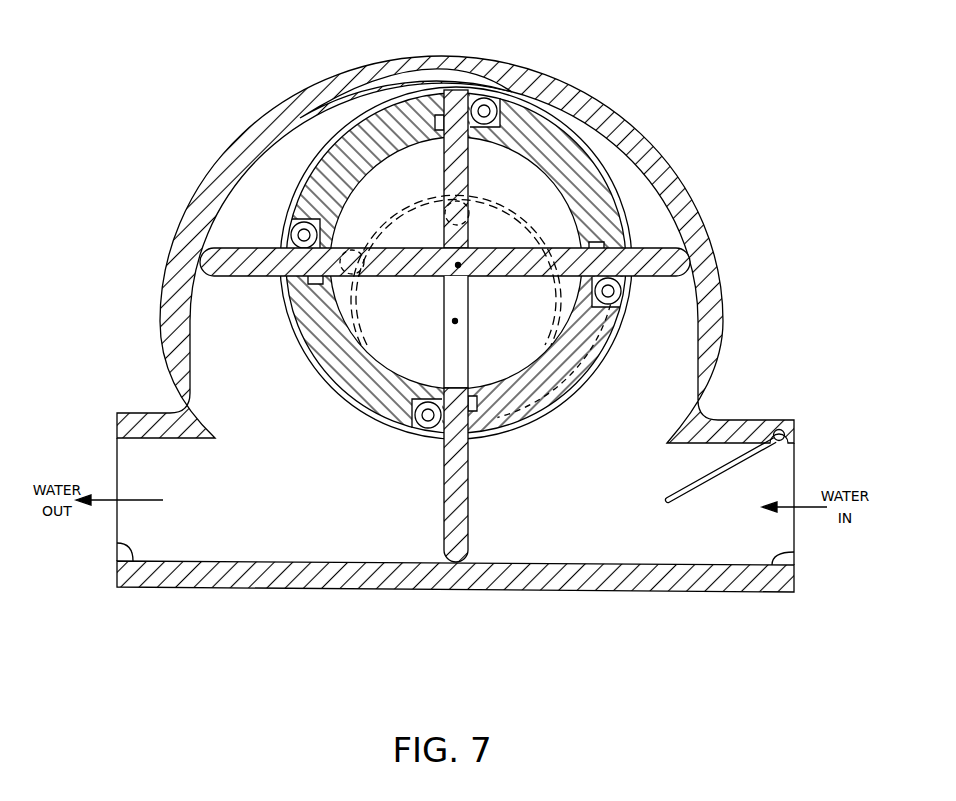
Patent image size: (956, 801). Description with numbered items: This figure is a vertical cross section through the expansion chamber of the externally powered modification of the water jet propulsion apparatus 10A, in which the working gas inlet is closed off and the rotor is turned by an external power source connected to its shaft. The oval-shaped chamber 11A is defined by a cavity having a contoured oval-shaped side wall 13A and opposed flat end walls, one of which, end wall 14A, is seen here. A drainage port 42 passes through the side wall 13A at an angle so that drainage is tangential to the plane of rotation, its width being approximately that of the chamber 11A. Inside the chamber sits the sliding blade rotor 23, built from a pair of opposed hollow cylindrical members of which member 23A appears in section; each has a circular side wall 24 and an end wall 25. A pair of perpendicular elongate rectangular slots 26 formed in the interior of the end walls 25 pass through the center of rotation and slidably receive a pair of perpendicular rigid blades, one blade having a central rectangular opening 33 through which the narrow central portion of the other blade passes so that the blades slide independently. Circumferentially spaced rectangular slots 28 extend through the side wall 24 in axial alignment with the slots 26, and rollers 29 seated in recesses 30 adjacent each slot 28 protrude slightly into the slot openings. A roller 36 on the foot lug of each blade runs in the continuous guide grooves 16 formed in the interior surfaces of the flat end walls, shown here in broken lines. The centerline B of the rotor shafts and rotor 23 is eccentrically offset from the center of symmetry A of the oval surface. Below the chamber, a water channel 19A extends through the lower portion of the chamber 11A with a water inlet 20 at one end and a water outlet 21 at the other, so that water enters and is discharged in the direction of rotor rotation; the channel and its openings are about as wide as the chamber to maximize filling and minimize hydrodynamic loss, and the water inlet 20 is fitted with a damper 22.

The water jet propulsion apparatus 10A is at (457, 306).
The oval-shaped chamber 11A is at (723, 352).
The contoured oval-shaped side wall 13A is at (250, 163).
The drainage port 42 is at (395, 72).
The flat end wall 14A is at (558, 460).
The water channel 19A is at (548, 514).
The water inlet 20 is at (794, 555).
The water outlet 21 is at (117, 547).
The damper 22 is at (708, 476).
The sliding blade rotor 23 is at (353, 410).
The hollow cylindrical member 23A is at (335, 394).
The circular side wall 24 is at (322, 352).
The end wall 25 is at (406, 196).
The elongate rectangular slots 26 is at (468, 140).
The rectangular slots 28 is at (437, 128).
The rollers 29 is at (492, 100).
The recesses 30 is at (520, 92).
The central rectangular opening 33 is at (460, 295).
The roller 36 is at (375, 220).
The continuous guide grooves 16 is at (512, 220).
The center of symmetry A is at (454, 323).
The centerline B is at (457, 268).